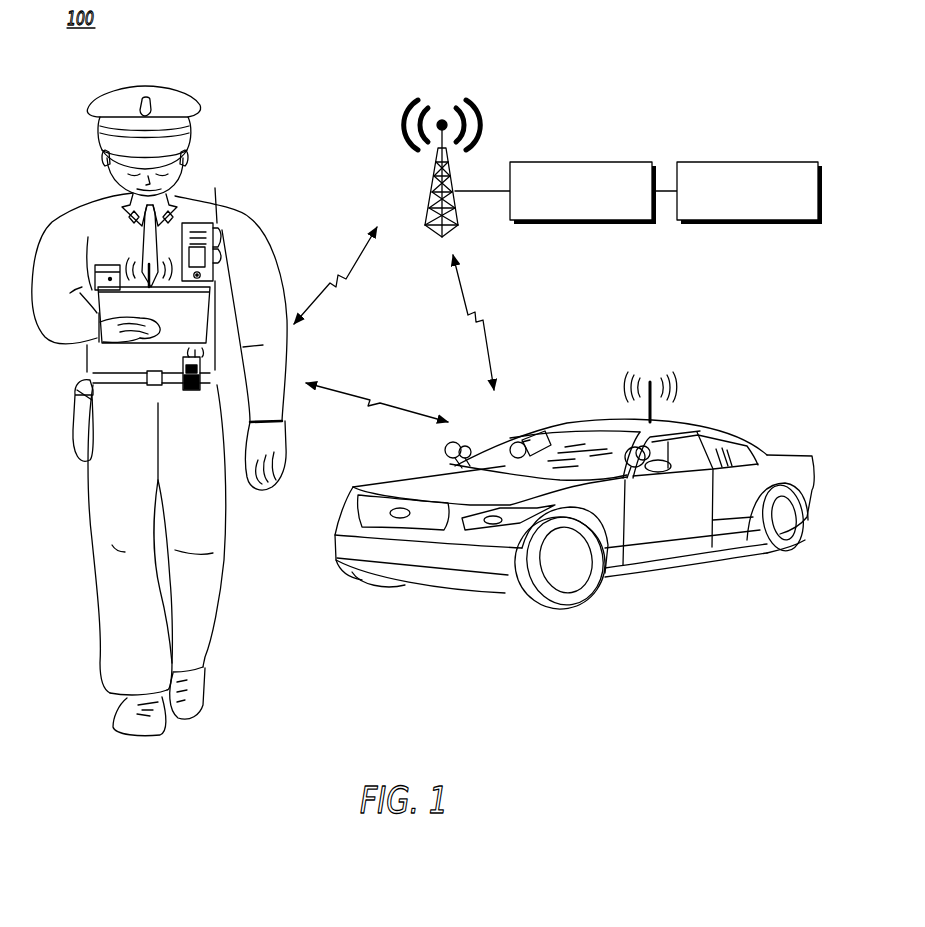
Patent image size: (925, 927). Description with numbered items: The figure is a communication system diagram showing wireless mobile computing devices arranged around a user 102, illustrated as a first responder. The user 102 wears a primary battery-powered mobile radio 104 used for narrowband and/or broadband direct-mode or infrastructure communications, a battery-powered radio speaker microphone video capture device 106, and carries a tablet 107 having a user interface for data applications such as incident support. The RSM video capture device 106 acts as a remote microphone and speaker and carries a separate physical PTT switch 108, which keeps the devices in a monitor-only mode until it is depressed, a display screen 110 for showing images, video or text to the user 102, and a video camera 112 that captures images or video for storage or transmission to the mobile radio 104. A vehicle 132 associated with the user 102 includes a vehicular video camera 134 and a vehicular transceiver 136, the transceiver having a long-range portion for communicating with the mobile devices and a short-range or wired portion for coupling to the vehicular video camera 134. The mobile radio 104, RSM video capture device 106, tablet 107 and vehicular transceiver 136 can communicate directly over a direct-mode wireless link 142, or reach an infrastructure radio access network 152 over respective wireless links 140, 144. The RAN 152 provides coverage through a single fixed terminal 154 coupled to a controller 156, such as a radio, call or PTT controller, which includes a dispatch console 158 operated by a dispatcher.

The user 102 is at (227, 178).
The mobile radio 104 is at (202, 360).
The radio speaker microphone (RSM) video capture device 106 is at (196, 222).
The tablet device 107 is at (103, 343).
The PTT switch 108 is at (223, 230).
The display screen 110 is at (225, 252).
The video camera 112 is at (203, 277).
The vehicle 132 is at (762, 403).
The vehicular video camera 134 is at (521, 437).
The vehicular transceiver 136 is at (652, 412).
The wireless link 140 is at (358, 252).
The direct-mode wireless link 142 is at (355, 396).
The wireless link 144 is at (472, 305).
The infrastructure radio access network (RAN) 152 is at (378, 133).
The fixed terminal 154 is at (429, 206).
The controller 156 is at (580, 162).
The dispatch console 158 is at (748, 162).